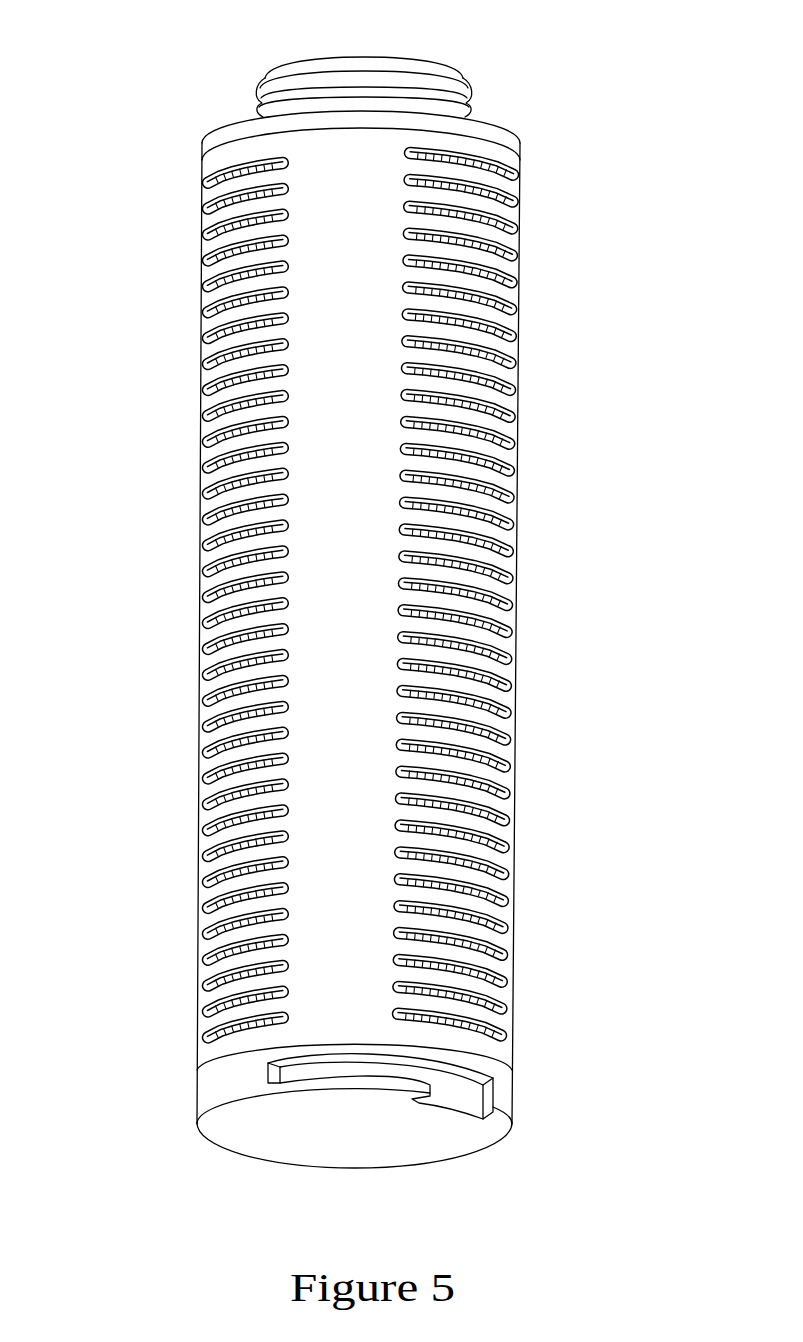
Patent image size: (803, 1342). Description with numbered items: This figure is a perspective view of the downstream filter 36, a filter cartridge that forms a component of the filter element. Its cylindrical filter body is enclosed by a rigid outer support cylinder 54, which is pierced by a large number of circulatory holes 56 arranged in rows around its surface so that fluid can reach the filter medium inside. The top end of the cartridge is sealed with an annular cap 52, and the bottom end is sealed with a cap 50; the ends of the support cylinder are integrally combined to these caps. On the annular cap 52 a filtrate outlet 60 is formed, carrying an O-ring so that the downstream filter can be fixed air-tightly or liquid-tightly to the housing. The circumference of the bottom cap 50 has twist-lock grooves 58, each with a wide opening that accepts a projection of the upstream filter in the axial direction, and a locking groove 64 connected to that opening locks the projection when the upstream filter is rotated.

The downstream filter 36 is at (164, 694).
The cap 50 is at (505, 1098).
The annular cap 52 is at (514, 142).
The rigid outer support cylinder 54 is at (500, 975).
The circulatory holes 56 is at (500, 632).
The twist-lock grooves 58 is at (441, 1092).
The filtrate outlet 60 is at (264, 78).
The locking groove 64 is at (307, 1072).